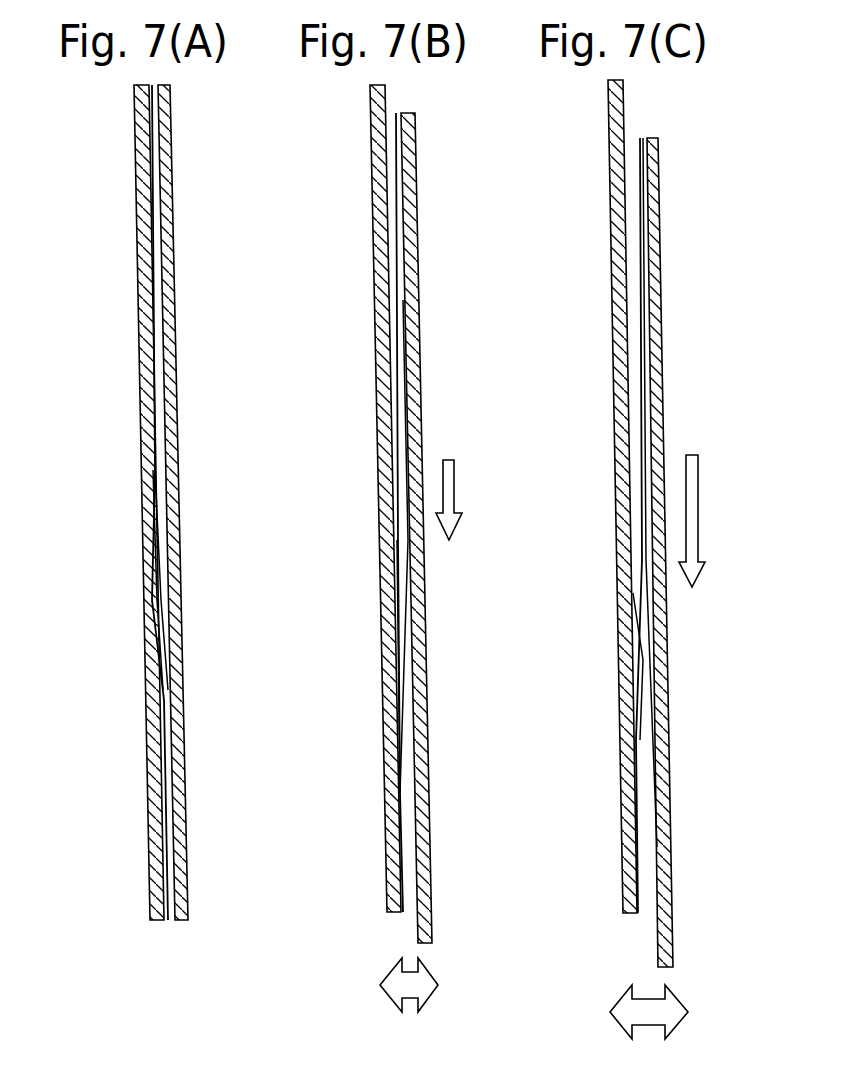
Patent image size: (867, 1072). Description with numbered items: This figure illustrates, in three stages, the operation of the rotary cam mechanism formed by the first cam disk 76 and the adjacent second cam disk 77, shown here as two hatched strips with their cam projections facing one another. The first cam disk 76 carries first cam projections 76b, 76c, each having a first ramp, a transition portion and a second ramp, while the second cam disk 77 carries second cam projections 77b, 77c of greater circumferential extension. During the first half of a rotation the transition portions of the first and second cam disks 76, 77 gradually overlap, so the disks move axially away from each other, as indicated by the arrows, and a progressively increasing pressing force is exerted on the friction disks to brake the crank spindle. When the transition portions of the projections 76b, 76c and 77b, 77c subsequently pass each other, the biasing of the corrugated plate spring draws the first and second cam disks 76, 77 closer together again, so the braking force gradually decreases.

In FIG. 7A, the first cam disk 76 is at (148, 769).
In FIG. 7B, the first cam disk 76 is at (388, 741).
In FIG. 7C, the first cam disk 76 is at (620, 689).
In FIG. 7A, the second cam disk 77 is at (177, 790).
In FIG. 7B, the second cam disk 77 is at (420, 673).
In FIG. 7C, the second cam disk 77 is at (662, 744).
In FIG. 7A, the first cam projection 76b is at (91, 580).
In FIG. 7B, the first cam projection 76b is at (328, 666).
In FIG. 7C, the first cam projection 76b is at (567, 702).
In FIG. 7A, the first cam projection 76c is at (161, 687).
In FIG. 7B, the first cam projection 76c is at (391, 672).
In FIG. 7C, the first cam projection 76c is at (632, 744).
In FIG. 7A, the second cam projection 77b is at (236, 502).
In FIG. 7B, the second cam projection 77b is at (483, 512).
In FIG. 7C, the second cam projection 77b is at (728, 525).
In FIG. 7A, the second cam projection 77c is at (160, 482).
In FIG. 7B, the second cam projection 77c is at (403, 583).
In FIG. 7C, the second cam projection 77c is at (649, 656).